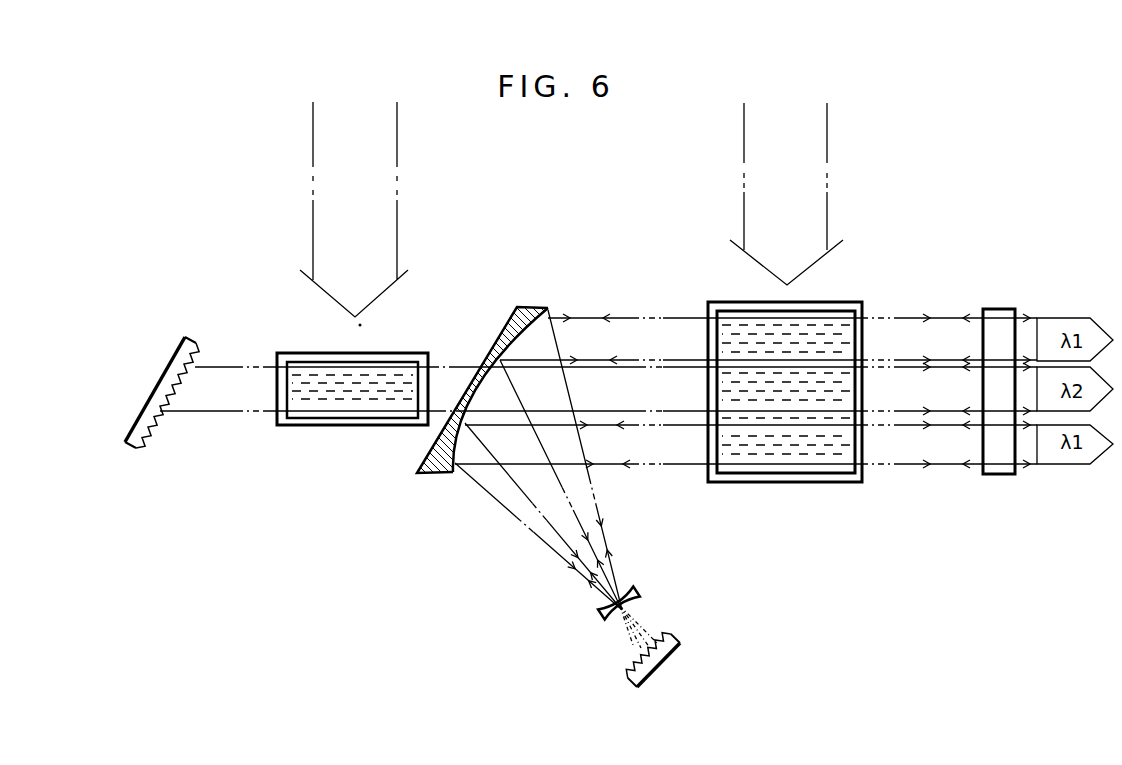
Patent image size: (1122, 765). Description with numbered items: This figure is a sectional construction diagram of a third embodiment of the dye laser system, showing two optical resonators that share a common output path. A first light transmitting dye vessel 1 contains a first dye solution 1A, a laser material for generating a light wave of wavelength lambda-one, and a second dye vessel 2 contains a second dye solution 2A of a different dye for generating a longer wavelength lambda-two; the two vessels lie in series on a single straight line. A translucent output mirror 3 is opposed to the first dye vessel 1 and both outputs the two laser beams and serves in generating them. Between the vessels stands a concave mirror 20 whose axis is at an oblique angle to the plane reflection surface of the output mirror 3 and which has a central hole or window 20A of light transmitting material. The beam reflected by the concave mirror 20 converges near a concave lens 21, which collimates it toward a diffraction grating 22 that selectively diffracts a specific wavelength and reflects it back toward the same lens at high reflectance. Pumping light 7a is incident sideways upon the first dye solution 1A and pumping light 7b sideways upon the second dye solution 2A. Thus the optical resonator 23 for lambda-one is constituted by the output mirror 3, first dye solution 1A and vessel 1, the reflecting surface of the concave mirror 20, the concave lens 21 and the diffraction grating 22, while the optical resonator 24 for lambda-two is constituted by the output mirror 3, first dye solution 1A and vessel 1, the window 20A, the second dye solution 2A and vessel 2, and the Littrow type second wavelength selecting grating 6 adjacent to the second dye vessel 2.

The first dye vessel 1 is at (785, 426).
The first dye solution 1A is at (833, 453).
The second dye vessel 2 is at (352, 416).
The second dye solution 2A is at (378, 403).
The output mirror 3 is at (1000, 473).
The second wavelength selecting means 6 is at (130, 443).
The pumping light 7a is at (787, 118).
The pumping light 7b is at (355, 127).
The concave mirror 20 is at (483, 421).
The window 20A is at (478, 360).
The concave lens 21 is at (600, 617).
The diffraction grating 22 is at (637, 677).
The optical resonator 23 is at (833, 637).
The optical resonator 24 is at (337, 637).